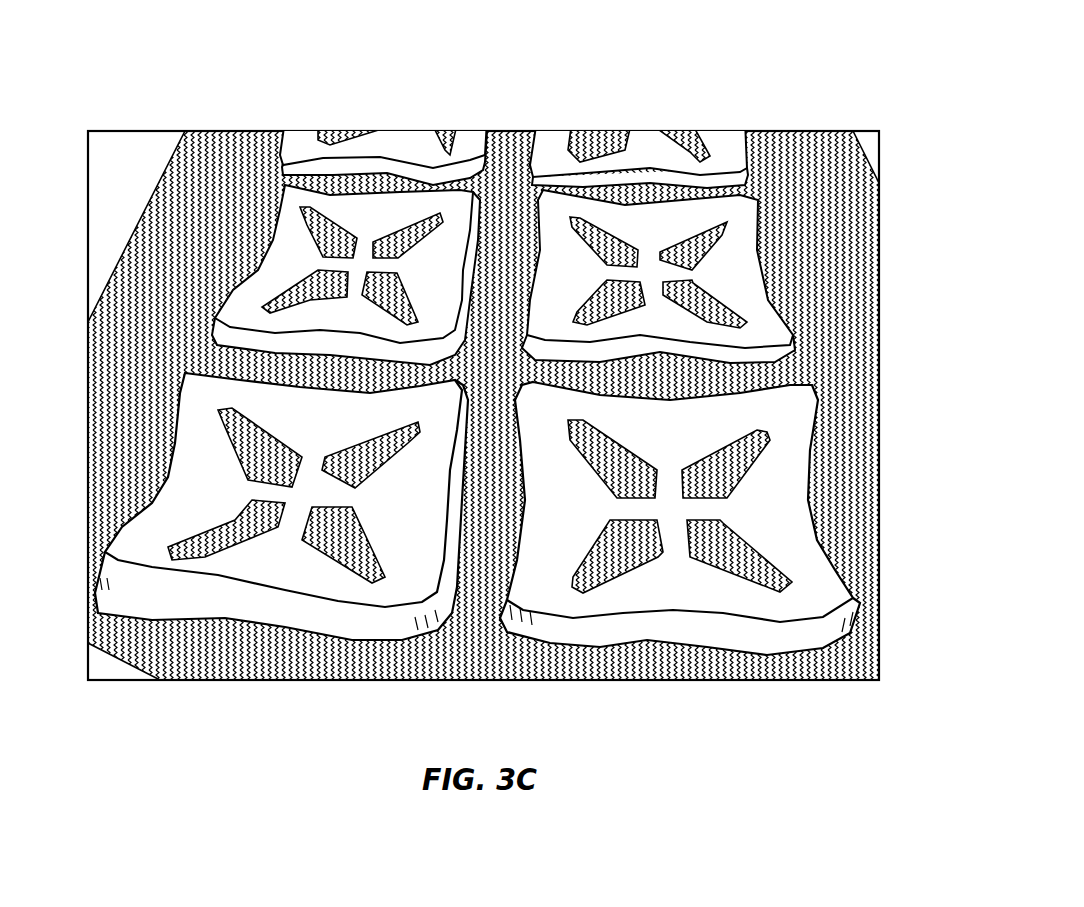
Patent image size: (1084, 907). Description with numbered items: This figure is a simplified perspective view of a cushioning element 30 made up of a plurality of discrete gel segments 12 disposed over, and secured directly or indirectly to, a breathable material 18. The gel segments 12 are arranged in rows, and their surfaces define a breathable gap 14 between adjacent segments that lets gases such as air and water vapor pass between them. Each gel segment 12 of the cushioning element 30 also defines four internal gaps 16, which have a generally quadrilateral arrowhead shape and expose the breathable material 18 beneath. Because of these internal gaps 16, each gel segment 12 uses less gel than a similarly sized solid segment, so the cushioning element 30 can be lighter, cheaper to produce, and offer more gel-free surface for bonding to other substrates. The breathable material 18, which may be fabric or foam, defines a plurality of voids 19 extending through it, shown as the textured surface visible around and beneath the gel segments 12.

The cushioning element 30 is at (153, 95).
The gel segment 12 is at (553, 150).
The breathable gap 14 is at (477, 612).
The internal gap 16 is at (617, 575).
The breathable material 18 is at (785, 160).
The void 19 is at (855, 418).